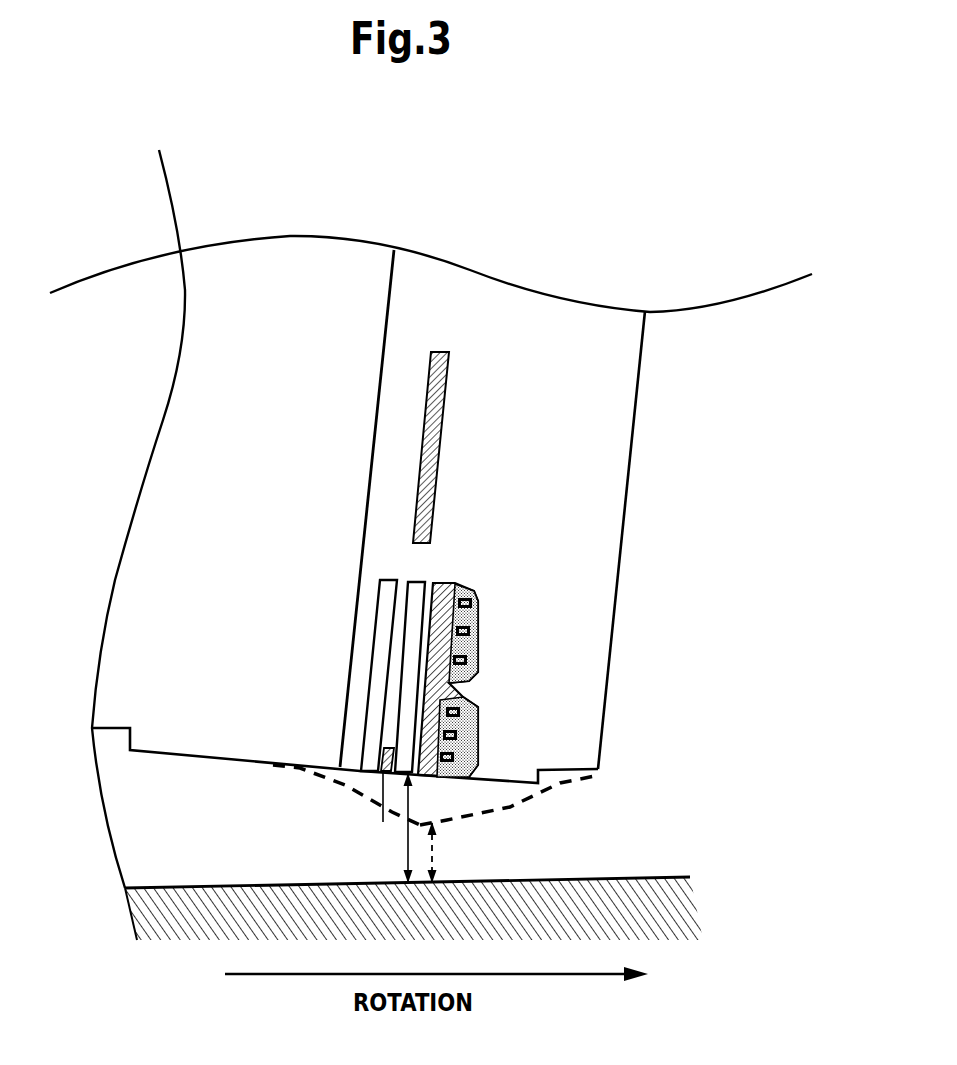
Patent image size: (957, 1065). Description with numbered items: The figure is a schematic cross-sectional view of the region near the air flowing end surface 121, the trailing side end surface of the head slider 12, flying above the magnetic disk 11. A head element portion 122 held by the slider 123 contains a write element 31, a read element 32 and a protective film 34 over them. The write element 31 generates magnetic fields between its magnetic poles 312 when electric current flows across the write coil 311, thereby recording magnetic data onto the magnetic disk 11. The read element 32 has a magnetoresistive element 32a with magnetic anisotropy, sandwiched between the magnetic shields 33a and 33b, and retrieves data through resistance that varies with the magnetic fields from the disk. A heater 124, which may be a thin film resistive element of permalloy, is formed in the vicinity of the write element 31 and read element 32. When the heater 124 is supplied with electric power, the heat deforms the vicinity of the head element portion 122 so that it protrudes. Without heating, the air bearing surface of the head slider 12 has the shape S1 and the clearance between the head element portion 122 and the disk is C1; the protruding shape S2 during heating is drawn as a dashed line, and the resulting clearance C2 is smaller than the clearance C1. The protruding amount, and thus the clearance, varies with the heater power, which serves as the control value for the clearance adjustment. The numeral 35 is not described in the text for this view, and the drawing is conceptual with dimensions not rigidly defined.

The magnetic disk 11 is at (623, 877).
The head slider 12 is at (468, 244).
The air flowing end surface 121 is at (638, 403).
The head element portion 122 is at (680, 543).
The slider 123 is at (95, 750).
The heater 124 is at (440, 460).
The write element 31 is at (597, 680).
The write coil 311 is at (478, 602).
The magnetic poles 312 is at (478, 718).
The read element 32 is at (366, 781).
The magnetoresistive element 32a is at (383, 822).
The magnetic shield 33a is at (417, 580).
The magnetic shield 33b is at (377, 600).
The protective film 34 is at (402, 342).
The rotor bottom surface 35 is at (172, 755).
The shape of the ABS in non-heating S1 is at (330, 770).
The protruding shape in heating S2 is at (510, 810).
The clearance in non-heating C1 is at (391, 828).
The clearance in heating C2 is at (454, 852).